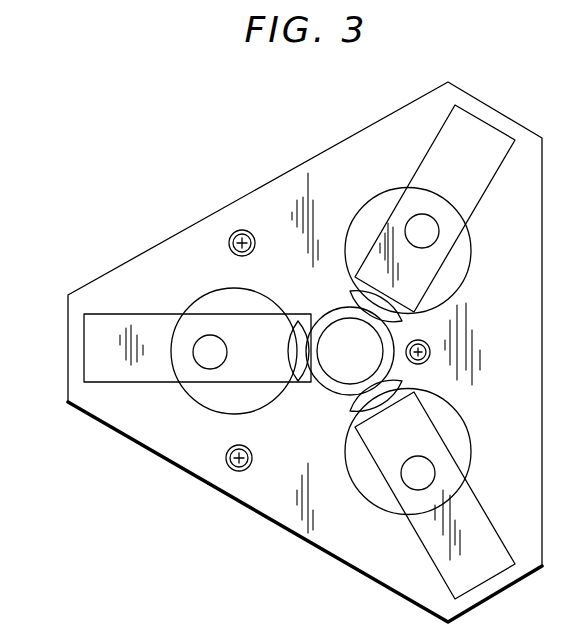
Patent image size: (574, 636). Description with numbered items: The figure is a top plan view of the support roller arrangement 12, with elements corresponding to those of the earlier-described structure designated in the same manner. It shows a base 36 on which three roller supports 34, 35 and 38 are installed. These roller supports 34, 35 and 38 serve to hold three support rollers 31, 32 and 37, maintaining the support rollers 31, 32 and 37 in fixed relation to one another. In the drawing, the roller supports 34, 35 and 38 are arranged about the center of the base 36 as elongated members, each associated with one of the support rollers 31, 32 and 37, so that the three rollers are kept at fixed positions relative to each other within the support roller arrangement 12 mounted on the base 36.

The support roller arrangement 12 is at (145, 179).
The support roller 31 is at (203, 293).
The support roller 32 is at (470, 418).
The roller support 34 is at (88, 343).
The roller support 35 is at (472, 513).
The base 36 is at (190, 473).
The support roller 37 is at (468, 280).
The roller support 38 is at (493, 132).